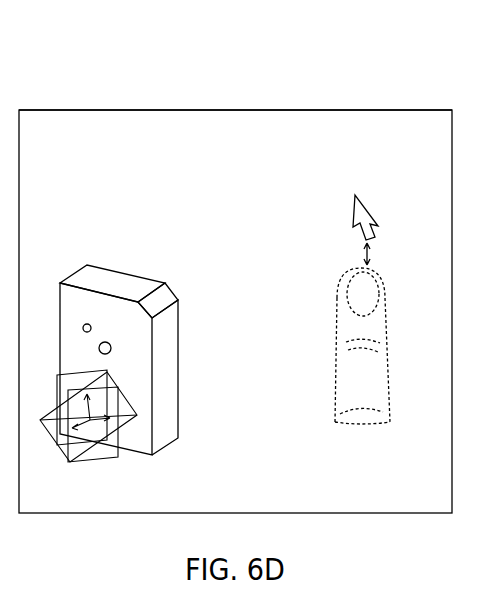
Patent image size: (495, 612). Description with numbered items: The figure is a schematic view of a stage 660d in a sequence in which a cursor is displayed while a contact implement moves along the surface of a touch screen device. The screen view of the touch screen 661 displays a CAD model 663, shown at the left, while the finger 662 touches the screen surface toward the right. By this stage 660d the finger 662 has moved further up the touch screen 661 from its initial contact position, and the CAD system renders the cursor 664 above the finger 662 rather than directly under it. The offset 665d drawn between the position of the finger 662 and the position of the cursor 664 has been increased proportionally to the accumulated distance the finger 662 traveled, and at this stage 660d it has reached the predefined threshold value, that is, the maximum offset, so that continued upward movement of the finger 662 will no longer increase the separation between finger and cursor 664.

The stage 660d is at (85, 110).
The touch screen 661 is at (257, 121).
The finger 662 is at (335, 328).
The CAD model 663 is at (180, 332).
The cursor 664 is at (353, 200).
The offset 665d is at (366, 257).